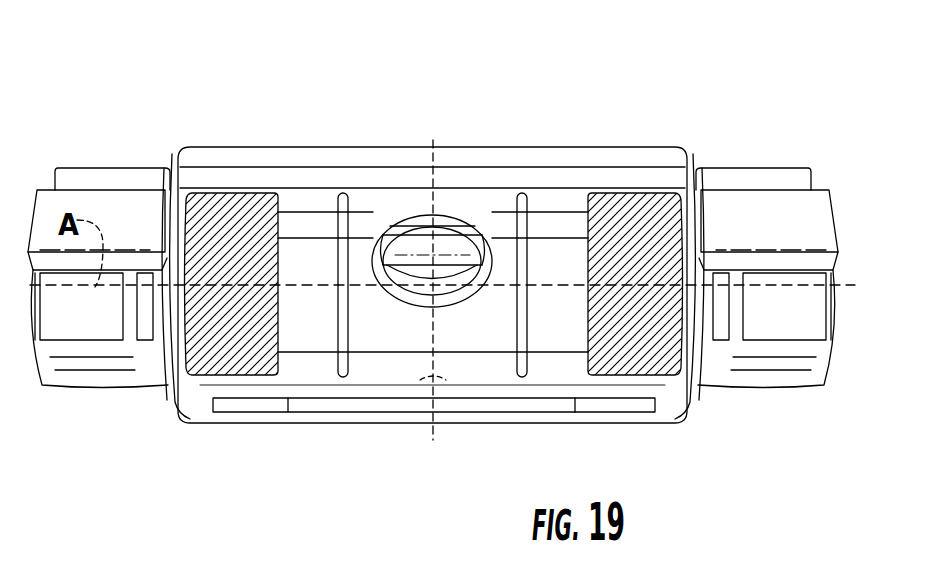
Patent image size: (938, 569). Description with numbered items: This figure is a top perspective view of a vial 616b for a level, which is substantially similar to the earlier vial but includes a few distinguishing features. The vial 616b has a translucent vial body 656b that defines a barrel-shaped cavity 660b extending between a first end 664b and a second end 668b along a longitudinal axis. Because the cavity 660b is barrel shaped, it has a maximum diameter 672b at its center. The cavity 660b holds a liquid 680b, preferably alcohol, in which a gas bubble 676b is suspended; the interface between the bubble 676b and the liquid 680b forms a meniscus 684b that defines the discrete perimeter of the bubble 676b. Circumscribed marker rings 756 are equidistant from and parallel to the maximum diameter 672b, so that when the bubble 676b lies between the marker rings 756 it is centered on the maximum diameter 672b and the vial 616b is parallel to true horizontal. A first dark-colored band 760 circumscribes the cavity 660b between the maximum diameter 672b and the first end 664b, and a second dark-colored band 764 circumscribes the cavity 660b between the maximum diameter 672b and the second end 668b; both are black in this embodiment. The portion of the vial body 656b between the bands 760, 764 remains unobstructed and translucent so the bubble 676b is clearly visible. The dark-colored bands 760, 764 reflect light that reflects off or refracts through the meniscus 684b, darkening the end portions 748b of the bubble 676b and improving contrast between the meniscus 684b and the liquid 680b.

The vial 616b is at (505, 58).
The first dark-colored band 760 is at (197, 215).
The second dark-colored band 764 is at (648, 213).
The marker rings 756 is at (342, 225).
The end portions of the bubble 748b is at (383, 230).
The meniscus 684b is at (447, 210).
The bubble 676b is at (413, 233).
The cavity 660b is at (394, 353).
The liquid 680b is at (303, 342).
The vial body 656b is at (383, 375).
The maximum diameter 672b is at (433, 380).
The first end 664b is at (150, 370).
The second end 668b is at (702, 347).